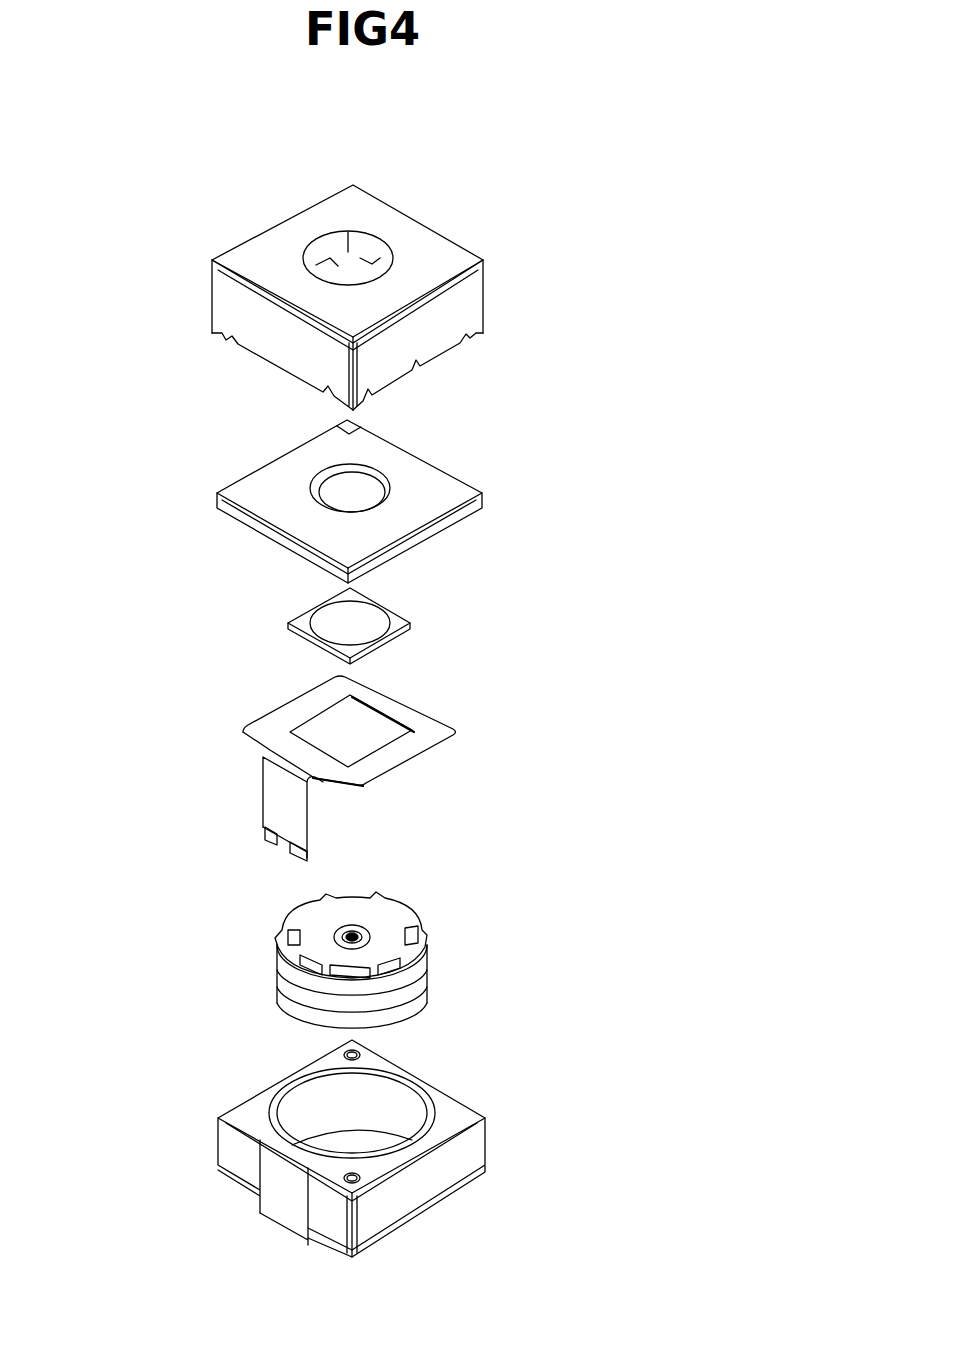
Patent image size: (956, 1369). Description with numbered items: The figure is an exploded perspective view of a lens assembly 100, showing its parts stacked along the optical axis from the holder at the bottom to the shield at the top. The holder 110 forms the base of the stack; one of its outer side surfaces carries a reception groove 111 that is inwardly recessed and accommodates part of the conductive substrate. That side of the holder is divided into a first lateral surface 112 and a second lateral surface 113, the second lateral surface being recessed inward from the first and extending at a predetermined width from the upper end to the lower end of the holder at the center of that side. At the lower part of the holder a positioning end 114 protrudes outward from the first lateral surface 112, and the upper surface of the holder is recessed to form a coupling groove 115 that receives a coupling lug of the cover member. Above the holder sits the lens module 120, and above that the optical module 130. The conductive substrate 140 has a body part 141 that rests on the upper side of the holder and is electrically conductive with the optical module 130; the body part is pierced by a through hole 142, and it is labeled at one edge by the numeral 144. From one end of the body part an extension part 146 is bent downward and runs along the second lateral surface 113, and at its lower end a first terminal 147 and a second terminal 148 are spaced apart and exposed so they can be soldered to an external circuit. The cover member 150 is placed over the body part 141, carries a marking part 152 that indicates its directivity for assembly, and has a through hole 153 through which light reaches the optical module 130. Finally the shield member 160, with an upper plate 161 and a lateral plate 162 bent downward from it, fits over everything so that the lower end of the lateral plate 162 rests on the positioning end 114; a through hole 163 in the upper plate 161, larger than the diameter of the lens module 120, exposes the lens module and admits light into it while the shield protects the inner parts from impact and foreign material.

The lens assembly 100 is at (128, 147).
The holder 110 is at (391, 1178).
The reception groove 111 is at (290, 1186).
The first lateral surface 112 is at (238, 1155).
The second lateral surface 113 is at (293, 1212).
The positioning end 114 is at (330, 1242).
The coupling groove 115 is at (357, 1182).
The lens module 120 is at (267, 957).
The optical module 130 is at (287, 623).
The conductive substrate 140 is at (393, 785).
The body part 141 is at (268, 732).
The through hole 142 is at (328, 731).
The frame edge 144 is at (350, 790).
The extension part 146 is at (298, 812).
The first terminal 147 is at (267, 837).
The second terminal 148 is at (295, 855).
The cover member 150 is at (400, 487).
The marking part 152 is at (343, 423).
The through hole 153 is at (345, 483).
The shield member 160 is at (435, 295).
The upper plate 161 is at (425, 253).
The lateral plate 162 is at (420, 340).
The through hole 163 is at (343, 270).